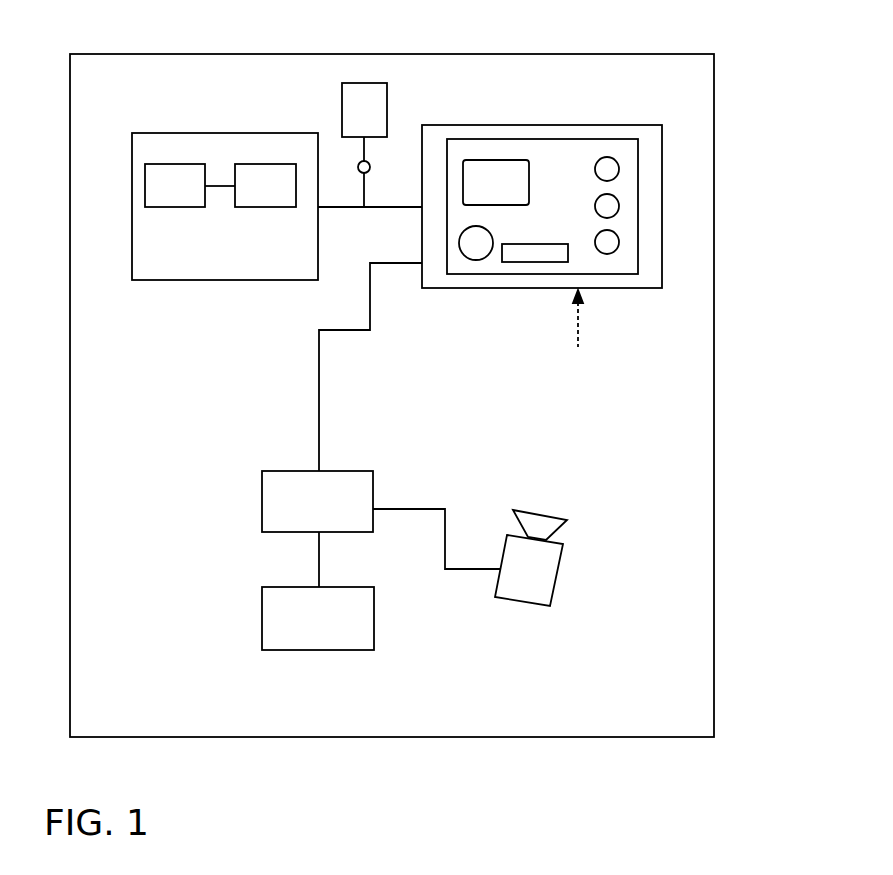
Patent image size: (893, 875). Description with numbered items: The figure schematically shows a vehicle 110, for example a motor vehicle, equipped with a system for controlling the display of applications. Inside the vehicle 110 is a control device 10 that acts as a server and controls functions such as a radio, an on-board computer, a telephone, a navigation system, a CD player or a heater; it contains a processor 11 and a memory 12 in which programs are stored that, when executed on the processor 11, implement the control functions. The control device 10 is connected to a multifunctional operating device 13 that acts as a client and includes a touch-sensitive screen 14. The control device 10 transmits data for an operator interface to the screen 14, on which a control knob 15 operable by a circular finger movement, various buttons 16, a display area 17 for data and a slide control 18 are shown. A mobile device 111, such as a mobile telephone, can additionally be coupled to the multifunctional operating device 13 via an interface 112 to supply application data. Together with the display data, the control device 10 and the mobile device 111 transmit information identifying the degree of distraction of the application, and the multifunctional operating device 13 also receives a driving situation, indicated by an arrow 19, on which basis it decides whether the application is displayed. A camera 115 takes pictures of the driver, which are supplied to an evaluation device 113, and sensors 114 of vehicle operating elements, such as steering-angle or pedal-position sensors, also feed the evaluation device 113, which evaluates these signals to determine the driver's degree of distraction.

The control device 10 is at (190, 280).
The processor 11 is at (174, 165).
The memory 12 is at (252, 165).
The multifunctional operating device 13 is at (499, 287).
The screen 14 is at (637, 269).
The control knob 15 is at (467, 258).
The buttons 16 is at (616, 168).
The display area 17 is at (477, 161).
The slide control 18 is at (533, 255).
The arrow 19 is at (578, 321).
The vehicle 110 is at (714, 303).
The mobile device 111 is at (376, 84).
The interface 112 is at (357, 166).
The evaluation device 113 is at (262, 517).
The sensors 114 is at (262, 634).
The camera 115 is at (553, 588).